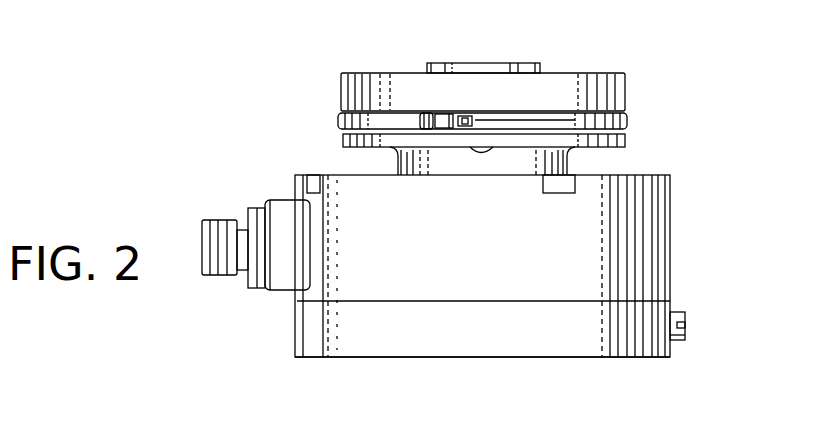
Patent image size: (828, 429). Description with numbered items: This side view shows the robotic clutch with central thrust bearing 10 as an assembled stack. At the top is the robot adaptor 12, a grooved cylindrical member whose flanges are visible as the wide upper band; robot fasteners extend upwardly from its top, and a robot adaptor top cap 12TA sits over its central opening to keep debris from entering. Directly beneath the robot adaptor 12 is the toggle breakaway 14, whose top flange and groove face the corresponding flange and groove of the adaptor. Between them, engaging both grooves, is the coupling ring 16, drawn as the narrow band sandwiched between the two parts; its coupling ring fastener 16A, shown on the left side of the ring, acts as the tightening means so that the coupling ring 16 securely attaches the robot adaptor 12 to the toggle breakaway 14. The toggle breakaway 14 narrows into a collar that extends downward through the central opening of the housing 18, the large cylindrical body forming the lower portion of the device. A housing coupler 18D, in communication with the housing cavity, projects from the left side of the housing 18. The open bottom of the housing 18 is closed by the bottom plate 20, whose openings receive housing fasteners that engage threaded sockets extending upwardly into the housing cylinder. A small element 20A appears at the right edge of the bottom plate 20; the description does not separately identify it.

The robotic clutch with central thrust bearing 10 is at (486, 38).
The robot adaptor 12 is at (628, 93).
The robot adaptor top cap 12TA is at (531, 63).
The toggle breakaway 14 is at (629, 147).
The coupling ring 16 is at (627, 121).
The coupling ring fastener 16A is at (420, 121).
The housing 18 is at (673, 230).
The housing coupler 18D is at (203, 277).
The bottom plate 20 is at (667, 362).
The housing tab 20A is at (685, 333).